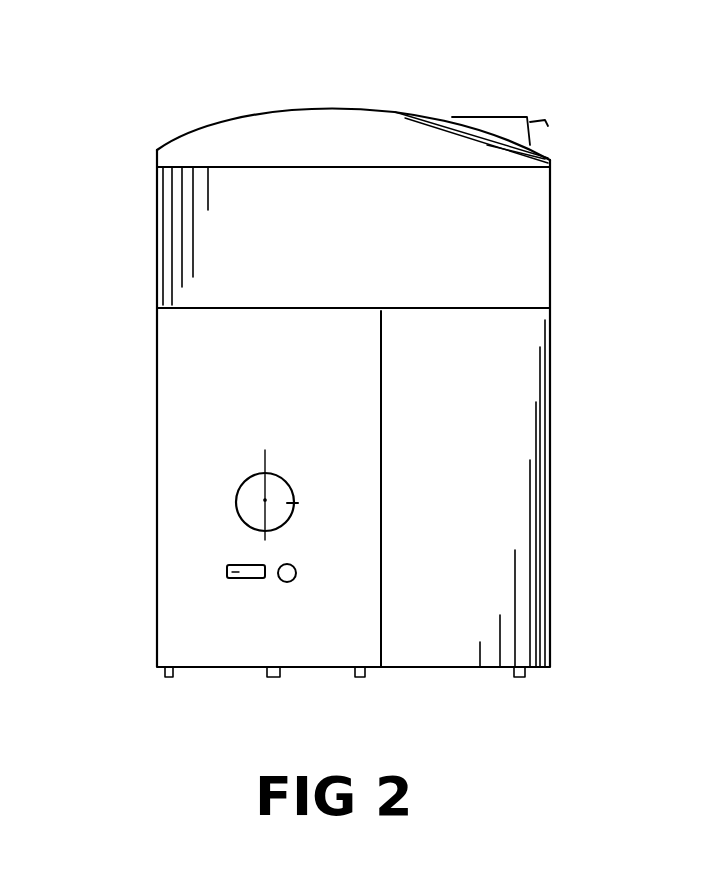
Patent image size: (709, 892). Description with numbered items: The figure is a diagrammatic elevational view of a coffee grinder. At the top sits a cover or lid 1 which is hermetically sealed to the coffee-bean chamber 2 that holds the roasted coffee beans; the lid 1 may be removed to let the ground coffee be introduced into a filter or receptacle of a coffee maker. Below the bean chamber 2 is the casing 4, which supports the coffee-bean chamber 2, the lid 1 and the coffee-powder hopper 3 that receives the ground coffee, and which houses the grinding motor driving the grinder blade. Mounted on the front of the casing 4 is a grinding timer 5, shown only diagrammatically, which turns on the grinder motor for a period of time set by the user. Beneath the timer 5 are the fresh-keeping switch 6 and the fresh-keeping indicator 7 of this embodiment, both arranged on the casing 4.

The cover or lid 1 is at (215, 148).
The coffee-bean chamber 2 is at (207, 238).
The coffee-powder hopper 3 is at (535, 438).
The casing 4 is at (200, 406).
The grinding timer 5 is at (244, 494).
The fresh-keeping switch 6 is at (227, 570).
The fresh-keeping indicator 7 is at (283, 585).